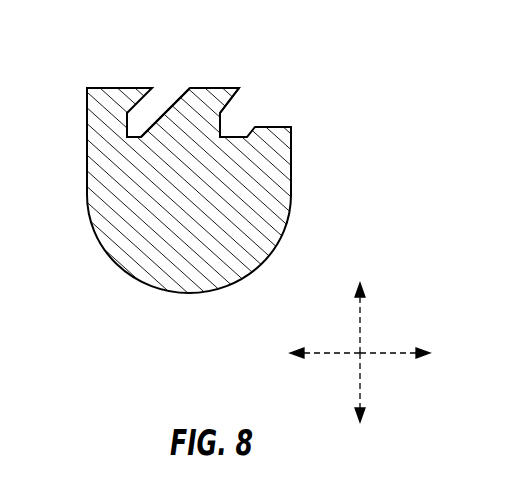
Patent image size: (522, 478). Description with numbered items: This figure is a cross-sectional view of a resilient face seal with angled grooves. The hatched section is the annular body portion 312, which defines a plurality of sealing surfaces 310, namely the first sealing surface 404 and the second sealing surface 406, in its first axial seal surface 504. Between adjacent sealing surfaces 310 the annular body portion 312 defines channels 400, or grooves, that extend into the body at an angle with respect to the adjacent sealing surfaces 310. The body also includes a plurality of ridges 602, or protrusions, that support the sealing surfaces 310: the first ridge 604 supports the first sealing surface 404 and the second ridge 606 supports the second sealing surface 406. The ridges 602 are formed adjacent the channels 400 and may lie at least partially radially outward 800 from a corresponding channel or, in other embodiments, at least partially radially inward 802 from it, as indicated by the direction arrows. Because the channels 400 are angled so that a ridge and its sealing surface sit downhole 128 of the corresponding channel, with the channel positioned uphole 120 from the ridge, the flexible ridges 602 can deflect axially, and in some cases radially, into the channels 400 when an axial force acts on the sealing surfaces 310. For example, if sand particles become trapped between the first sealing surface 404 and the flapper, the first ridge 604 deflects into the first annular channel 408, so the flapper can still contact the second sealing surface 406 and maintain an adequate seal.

The sealing surfaces 310 is at (108, 88).
The annular body portion 312 is at (270, 237).
The channels 400 is at (90, 180).
The first sealing surface 404 is at (135, 88).
The second sealing surface 406 is at (227, 88).
The first annular channel 408 is at (143, 127).
The first axial seal surface 504 is at (160, 78).
The ridges 602 is at (110, 92).
The first ridge 604 is at (110, 100).
The second ridge 606 is at (188, 118).
The downhole 128 is at (362, 317).
The uphole 120 is at (358, 388).
The radially outward 800 is at (323, 350).
The radially inward 802 is at (393, 355).